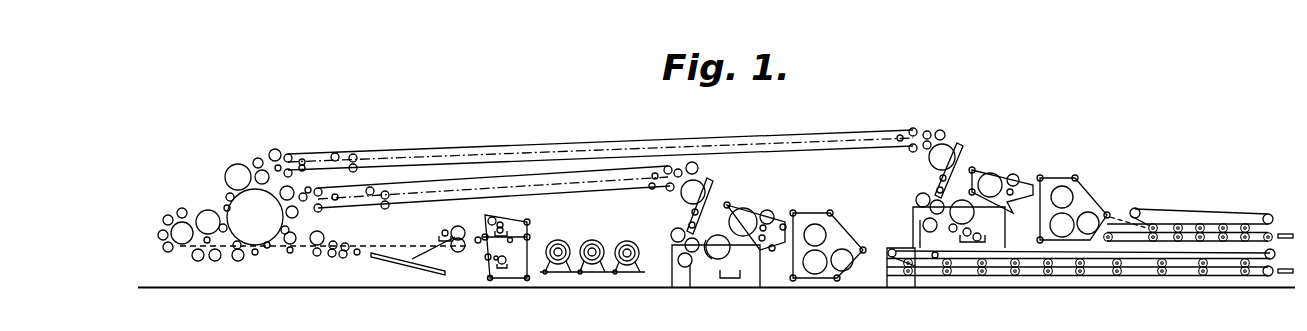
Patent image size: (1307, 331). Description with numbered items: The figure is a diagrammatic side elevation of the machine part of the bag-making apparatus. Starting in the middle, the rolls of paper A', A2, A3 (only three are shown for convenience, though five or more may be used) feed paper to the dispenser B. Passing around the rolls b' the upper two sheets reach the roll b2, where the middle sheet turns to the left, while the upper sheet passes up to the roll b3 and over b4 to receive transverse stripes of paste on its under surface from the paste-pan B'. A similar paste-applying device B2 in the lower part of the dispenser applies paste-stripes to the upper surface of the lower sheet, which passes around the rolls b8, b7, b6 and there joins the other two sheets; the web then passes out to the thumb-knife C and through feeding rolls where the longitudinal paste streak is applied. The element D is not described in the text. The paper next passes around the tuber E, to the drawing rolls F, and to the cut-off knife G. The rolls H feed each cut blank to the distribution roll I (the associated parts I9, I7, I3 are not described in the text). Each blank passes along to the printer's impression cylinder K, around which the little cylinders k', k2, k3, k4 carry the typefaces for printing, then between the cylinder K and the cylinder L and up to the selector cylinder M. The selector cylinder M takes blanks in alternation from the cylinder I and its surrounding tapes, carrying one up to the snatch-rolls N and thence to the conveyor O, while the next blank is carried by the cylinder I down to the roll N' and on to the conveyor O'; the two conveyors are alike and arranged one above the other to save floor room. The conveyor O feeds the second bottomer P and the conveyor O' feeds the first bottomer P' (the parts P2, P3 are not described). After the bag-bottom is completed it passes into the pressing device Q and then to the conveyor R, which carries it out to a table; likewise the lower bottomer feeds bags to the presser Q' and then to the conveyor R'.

The distribution roll I is at (255, 217).
The roller I9 is at (198, 261).
The roller I7 is at (215, 261).
The roller I3 is at (238, 261).
The impression cylinder K is at (182, 233).
The little cylinder k' is at (155, 257).
The little cylinder k2 is at (158, 236).
The little cylinder k3 is at (163, 220).
The little cylinder k4 is at (179, 209).
The cylinder L is at (208, 222).
The selector cylinder M is at (228, 167).
The snatch-rolls N is at (271, 147).
The roll N' is at (295, 166).
The rolls H is at (295, 236).
The cut-off knife G is at (315, 231).
The drawing rolls F is at (341, 243).
The tuber E is at (413, 254).
The guide D is at (444, 229).
The thumb-knife C is at (460, 226).
The conveyor O is at (600, 152).
The conveyor O' is at (489, 189).
The dispenser B is at (507, 240).
The paste-pan B' is at (520, 228).
The paste-applying device B2 is at (508, 263).
The rolls b' is at (538, 276).
The roll b2 is at (527, 238).
The roll b3 is at (488, 219).
The roll b4 is at (503, 215).
The roll b6 is at (478, 244).
The roll b7 is at (485, 258).
The roll b8 is at (487, 278).
The roll of paper A' is at (563, 243).
The roll of paper A2 is at (598, 241).
The roll of paper A3 is at (633, 241).
The second bottomer P is at (878, 197).
The first bottomer P' is at (815, 136).
The roller P2 is at (925, 130).
The cylinder P3 is at (970, 120).
The pressing device Q is at (1092, 209).
The presser Q' is at (828, 245).
The conveyor R is at (1198, 213).
The conveyor R' is at (1090, 276).